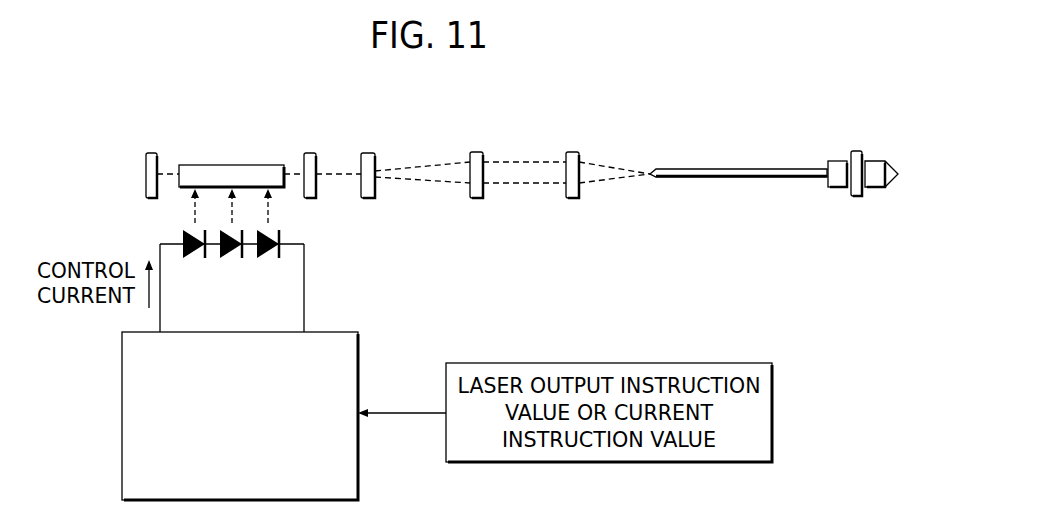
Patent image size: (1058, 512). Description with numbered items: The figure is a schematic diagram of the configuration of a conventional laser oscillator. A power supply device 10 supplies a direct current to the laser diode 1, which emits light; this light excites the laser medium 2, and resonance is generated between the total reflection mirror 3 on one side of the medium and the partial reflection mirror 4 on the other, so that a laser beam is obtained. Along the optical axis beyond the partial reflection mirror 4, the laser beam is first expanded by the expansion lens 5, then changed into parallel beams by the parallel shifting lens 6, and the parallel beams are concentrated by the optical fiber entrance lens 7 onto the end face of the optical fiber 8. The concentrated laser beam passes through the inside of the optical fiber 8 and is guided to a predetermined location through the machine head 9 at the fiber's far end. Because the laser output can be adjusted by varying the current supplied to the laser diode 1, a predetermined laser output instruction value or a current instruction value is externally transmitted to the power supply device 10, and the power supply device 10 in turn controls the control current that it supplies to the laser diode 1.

The laser diode 1 is at (258, 259).
The laser medium 2 is at (228, 163).
The total reflection mirror 3 is at (150, 150).
The partial reflection mirror 4 is at (310, 151).
The expansion lens 5 is at (368, 151).
The parallel shifting lens 6 is at (474, 149).
The optical fiber entrance lens 7 is at (572, 149).
The optical fiber 8 is at (750, 167).
The machine head 9 is at (857, 149).
The power supply device 10 is at (345, 330).